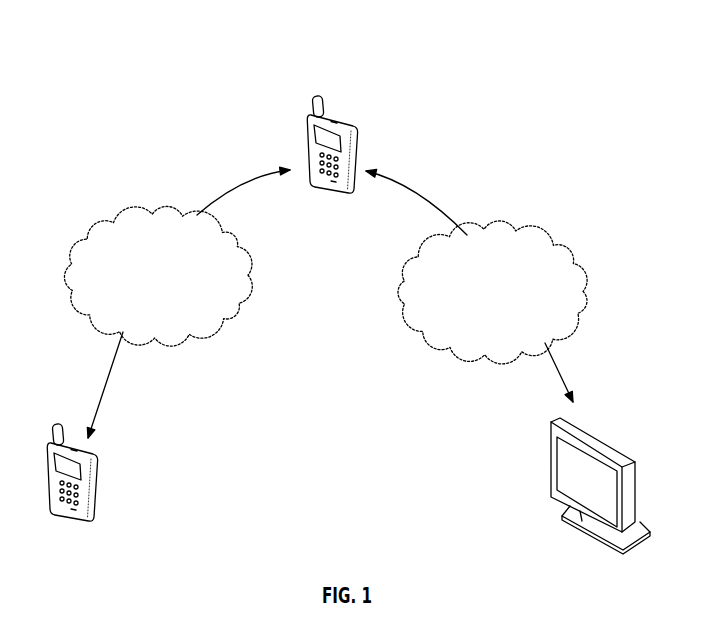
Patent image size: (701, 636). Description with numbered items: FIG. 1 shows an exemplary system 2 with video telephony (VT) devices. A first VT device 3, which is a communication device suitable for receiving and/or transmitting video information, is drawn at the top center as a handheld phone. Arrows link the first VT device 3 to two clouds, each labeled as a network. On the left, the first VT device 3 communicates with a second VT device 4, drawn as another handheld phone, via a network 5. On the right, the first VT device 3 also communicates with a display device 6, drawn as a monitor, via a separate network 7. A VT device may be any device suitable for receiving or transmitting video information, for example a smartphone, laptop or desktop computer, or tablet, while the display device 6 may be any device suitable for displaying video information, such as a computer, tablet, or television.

The communication system 2 is at (565, 42).
The first VT device 3 is at (312, 94).
The second VT device 4 is at (54, 422).
The network 5 is at (133, 212).
The display device 6 is at (595, 428).
The network 7 is at (531, 227).